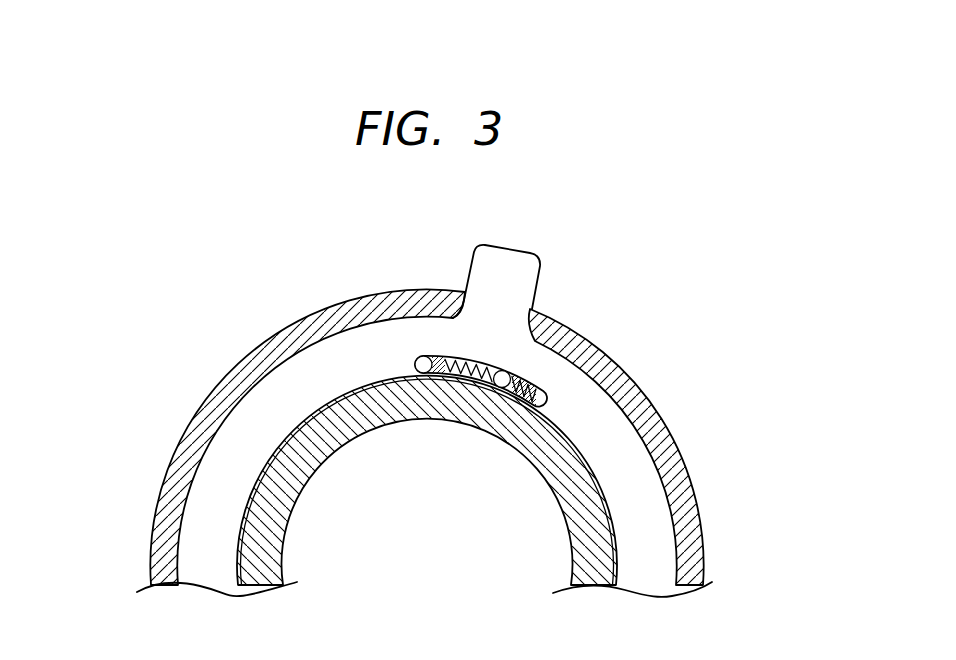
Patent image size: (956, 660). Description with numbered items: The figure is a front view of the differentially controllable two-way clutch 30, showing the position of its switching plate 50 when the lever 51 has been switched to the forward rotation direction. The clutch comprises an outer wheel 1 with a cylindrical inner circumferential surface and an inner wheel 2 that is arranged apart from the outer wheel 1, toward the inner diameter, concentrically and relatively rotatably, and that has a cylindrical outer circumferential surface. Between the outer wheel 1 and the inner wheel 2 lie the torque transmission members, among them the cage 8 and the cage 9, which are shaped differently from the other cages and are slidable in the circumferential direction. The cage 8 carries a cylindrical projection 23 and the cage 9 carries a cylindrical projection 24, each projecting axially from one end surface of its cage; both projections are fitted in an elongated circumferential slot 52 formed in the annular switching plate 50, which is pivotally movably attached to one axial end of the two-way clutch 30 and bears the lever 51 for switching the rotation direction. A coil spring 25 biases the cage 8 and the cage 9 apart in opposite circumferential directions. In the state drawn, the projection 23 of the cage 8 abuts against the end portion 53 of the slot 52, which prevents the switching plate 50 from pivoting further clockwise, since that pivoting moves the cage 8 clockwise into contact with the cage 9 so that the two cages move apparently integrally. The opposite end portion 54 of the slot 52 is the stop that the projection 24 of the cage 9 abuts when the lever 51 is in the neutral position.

The outer wheel 1 is at (217, 403).
The inner wheel 2 is at (273, 522).
The cage 8 is at (437, 352).
The cage 9 is at (500, 371).
The projection 23 is at (423, 365).
The projection 24 is at (502, 380).
The coil spring 25 is at (466, 378).
The two-way clutch 30 is at (687, 307).
The switching plate 50 is at (627, 444).
The lever 51 is at (500, 262).
The slot 52 is at (563, 345).
The end portion 53 is at (415, 362).
The end portion 54 is at (543, 400).